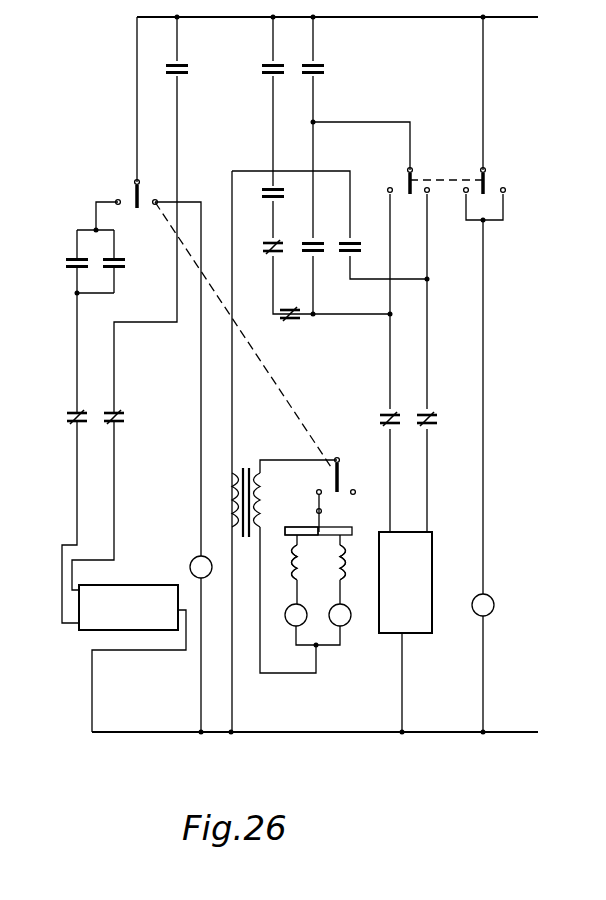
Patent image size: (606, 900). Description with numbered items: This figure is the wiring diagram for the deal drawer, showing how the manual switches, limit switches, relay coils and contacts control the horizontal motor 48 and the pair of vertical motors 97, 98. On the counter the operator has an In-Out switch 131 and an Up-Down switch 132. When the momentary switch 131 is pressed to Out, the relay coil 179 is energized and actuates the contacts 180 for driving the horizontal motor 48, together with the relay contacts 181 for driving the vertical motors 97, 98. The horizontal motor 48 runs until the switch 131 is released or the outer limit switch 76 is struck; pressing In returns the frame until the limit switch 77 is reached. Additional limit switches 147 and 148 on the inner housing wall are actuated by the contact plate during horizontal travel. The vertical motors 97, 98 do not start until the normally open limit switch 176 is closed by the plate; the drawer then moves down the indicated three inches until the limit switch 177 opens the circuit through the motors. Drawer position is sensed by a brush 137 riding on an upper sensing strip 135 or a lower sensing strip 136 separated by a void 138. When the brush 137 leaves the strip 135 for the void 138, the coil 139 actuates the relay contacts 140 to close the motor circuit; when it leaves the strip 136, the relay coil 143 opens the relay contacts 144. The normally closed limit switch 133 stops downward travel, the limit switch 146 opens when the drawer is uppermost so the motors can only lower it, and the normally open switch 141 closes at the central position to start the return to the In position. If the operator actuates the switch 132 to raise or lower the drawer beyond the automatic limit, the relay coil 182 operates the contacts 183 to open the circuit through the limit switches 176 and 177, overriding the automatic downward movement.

The contacts 180 is at (186, 70).
The relay contacts 181 is at (264, 70).
The limit switch 147 is at (324, 70).
The In-Out switch 131 is at (142, 186).
The manual switch 132 is at (404, 182).
The normally open switch 141 is at (70, 260).
The limit switch 148 is at (124, 259).
The limit switch 176 is at (279, 195).
The contacts 183 is at (264, 252).
The relay contacts 144 is at (313, 248).
The relay contacts 140 is at (356, 246).
The limit switch 177 is at (290, 327).
The limit switch 77 is at (68, 425).
The outer limit switch 76 is at (122, 425).
The normally closed limit switch 133 is at (396, 414).
The limit switch 146 is at (433, 414).
The relay coil 179 is at (195, 555).
The reversible motor 48 is at (120, 585).
The brush 137 is at (322, 511).
The sensing strip 135 is at (343, 531).
The sensing strip 136 is at (300, 527).
The void 138 is at (313, 540).
The relay coil 143 is at (288, 624).
The coil 139 is at (348, 624).
The reversible motor 97 is at (431, 568).
The reversible motor 98 is at (419, 582).
The relay coil 182 is at (492, 600).